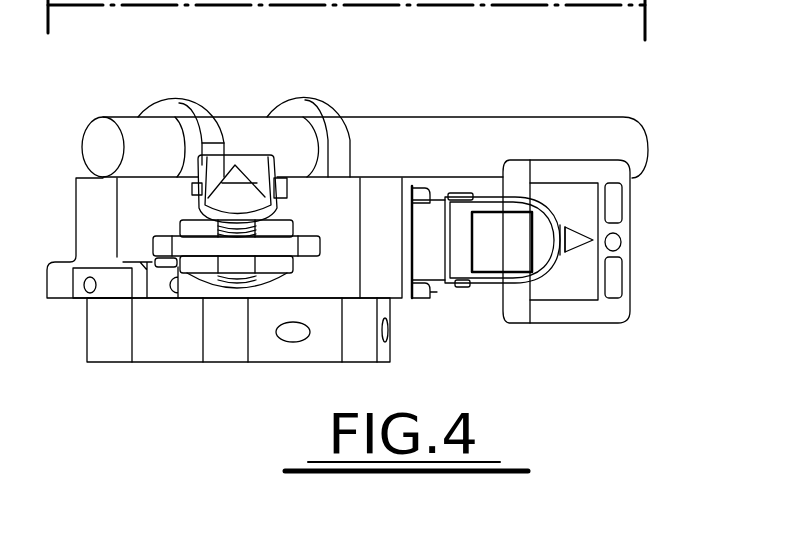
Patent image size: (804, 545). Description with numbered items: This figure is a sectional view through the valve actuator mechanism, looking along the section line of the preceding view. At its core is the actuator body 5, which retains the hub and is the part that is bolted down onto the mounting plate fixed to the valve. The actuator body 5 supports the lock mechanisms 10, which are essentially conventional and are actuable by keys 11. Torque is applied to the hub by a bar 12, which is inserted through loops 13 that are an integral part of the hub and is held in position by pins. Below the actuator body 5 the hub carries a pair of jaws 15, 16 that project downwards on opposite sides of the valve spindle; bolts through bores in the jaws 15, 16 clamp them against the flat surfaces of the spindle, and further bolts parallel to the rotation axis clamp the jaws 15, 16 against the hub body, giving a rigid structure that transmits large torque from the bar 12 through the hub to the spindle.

The actuator body 5 is at (98, 252).
The lock mechanism 10 is at (430, 186).
The key 11 is at (175, 248).
The bar 12 is at (477, 125).
The loop 13 is at (183, 102).
The jaw 15 is at (150, 328).
The jaw 16 is at (275, 342).